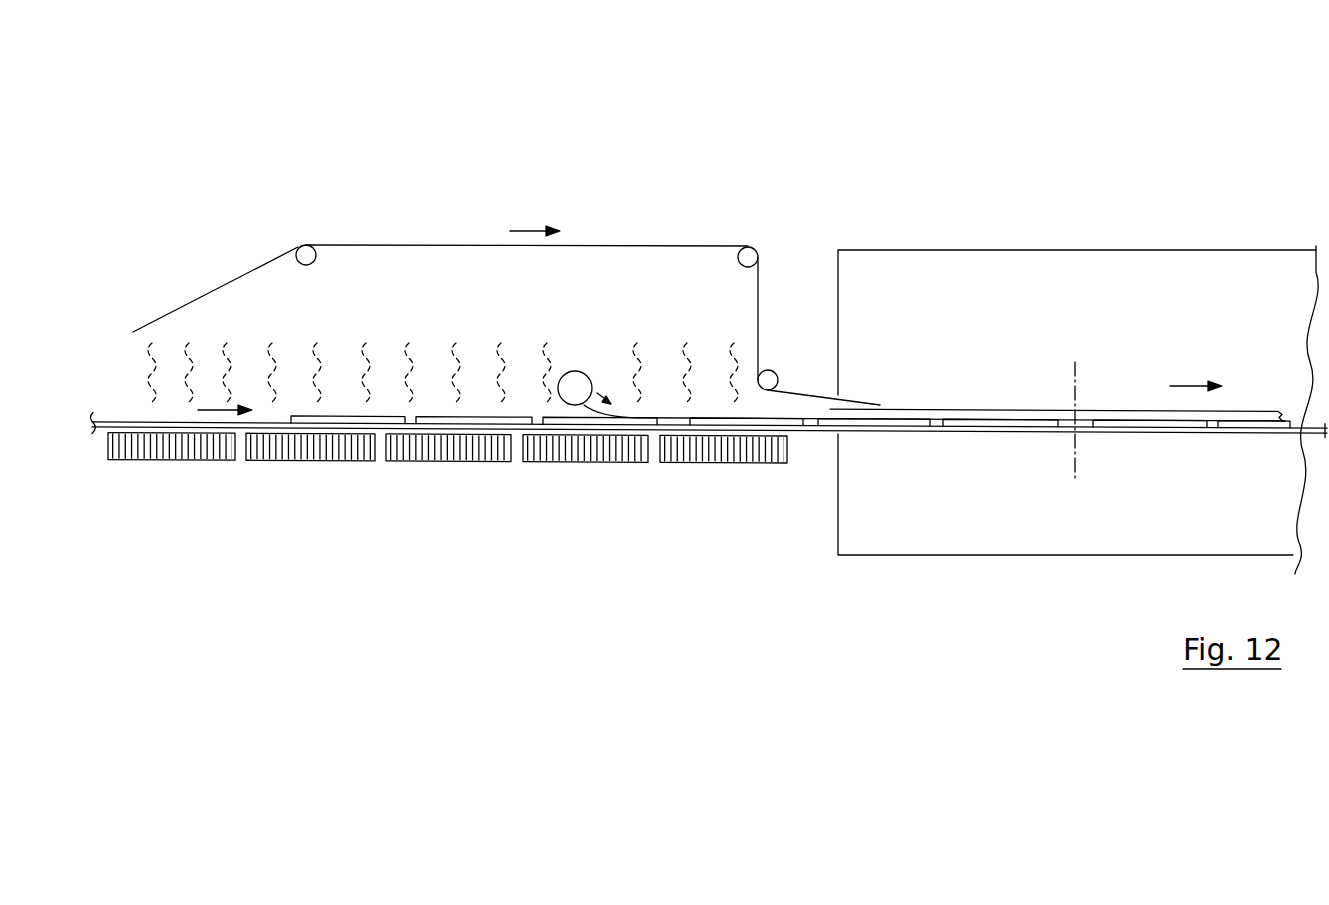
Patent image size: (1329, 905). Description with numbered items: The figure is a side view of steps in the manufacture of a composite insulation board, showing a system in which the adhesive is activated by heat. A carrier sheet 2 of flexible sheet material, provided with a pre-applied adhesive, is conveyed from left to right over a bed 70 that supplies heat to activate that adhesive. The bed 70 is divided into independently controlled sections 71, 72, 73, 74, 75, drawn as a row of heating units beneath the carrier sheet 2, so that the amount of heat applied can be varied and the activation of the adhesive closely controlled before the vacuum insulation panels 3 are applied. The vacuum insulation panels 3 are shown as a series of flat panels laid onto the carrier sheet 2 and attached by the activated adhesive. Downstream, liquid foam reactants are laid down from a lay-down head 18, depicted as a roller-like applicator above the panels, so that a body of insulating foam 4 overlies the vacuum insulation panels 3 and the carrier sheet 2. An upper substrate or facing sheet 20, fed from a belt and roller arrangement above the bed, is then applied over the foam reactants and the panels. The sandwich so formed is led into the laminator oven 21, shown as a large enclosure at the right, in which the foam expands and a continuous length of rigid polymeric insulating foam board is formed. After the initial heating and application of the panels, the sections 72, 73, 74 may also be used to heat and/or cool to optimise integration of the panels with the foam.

The carrier sheet 2 is at (105, 430).
The vacuum insulation panels 3 is at (345, 419).
The body of insulating foam 4 is at (1118, 406).
The lay-down head 18 is at (575, 374).
The upper substrate or facing sheet 20 is at (760, 282).
The laminator oven 21 is at (1110, 262).
The bed 70 is at (568, 560).
The bed section 71 is at (176, 452).
The bed section 72 is at (316, 452).
The bed section 73 is at (458, 450).
The bed section 74 is at (604, 450).
The bed section 75 is at (753, 450).